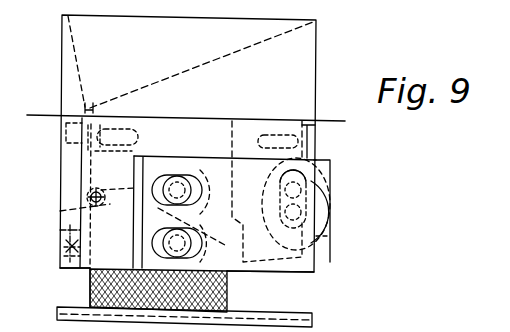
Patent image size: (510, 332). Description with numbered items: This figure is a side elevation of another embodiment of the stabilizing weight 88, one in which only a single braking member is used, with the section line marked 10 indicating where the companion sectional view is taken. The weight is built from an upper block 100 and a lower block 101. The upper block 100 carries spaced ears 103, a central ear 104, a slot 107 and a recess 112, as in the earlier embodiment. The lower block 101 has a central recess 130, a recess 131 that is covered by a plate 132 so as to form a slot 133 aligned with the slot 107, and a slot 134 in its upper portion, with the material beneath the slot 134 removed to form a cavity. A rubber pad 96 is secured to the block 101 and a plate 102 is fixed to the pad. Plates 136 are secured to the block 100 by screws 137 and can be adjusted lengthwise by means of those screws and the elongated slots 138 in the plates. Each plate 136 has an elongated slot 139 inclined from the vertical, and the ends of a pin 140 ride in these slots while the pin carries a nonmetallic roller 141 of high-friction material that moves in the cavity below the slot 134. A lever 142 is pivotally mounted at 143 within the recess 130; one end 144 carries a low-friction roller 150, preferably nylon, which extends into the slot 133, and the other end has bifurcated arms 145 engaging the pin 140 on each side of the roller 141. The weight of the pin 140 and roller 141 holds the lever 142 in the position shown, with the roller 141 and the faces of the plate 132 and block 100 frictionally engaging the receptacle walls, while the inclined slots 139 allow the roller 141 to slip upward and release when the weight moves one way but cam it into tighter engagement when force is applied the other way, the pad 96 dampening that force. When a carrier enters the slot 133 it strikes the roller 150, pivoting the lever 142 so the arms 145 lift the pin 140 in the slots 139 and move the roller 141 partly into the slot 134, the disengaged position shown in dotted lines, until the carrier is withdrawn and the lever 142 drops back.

The section line 10- 10 is at (33, 110).
The stabilizing weight 88 is at (318, 58).
The rubber pad 96 is at (93, 290).
The upper block 100 is at (326, 25).
The block 101 is at (318, 269).
The plate 102 is at (316, 318).
The spaced ears 103 is at (318, 159).
The central ear 104 is at (86, 143).
The slot 107 is at (89, 107).
The recess 112 is at (178, 76).
The central recess 130 is at (90, 268).
The recess 131 is at (68, 253).
The plate 132 is at (70, 169).
The slot 133 is at (75, 229).
The slot 134 is at (233, 130).
The plates 136 is at (218, 263).
The screws 137 is at (179, 176).
The elongated slots 138 is at (158, 197).
The elongated slot 139 is at (322, 190).
The pin 140 is at (330, 236).
The nonmetallic roller 141 is at (331, 214).
The lever 142 is at (86, 196).
The pivot 143 is at (270, 193).
The end of lever 144 is at (62, 211).
The bifurcated arms 145 is at (303, 266).
The roller 150 is at (94, 192).